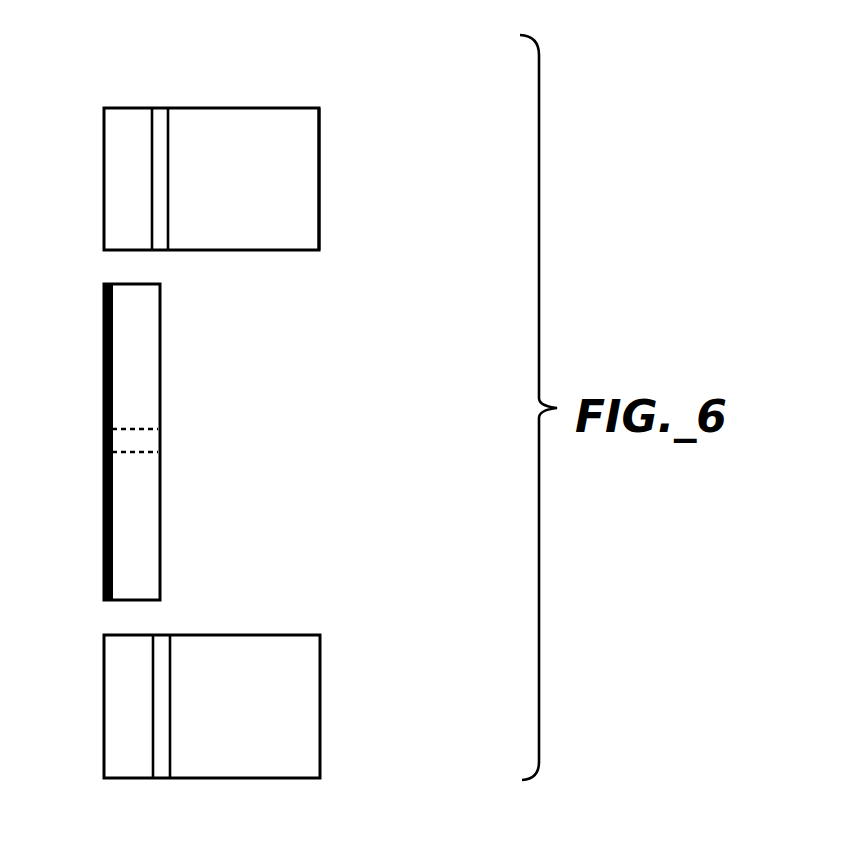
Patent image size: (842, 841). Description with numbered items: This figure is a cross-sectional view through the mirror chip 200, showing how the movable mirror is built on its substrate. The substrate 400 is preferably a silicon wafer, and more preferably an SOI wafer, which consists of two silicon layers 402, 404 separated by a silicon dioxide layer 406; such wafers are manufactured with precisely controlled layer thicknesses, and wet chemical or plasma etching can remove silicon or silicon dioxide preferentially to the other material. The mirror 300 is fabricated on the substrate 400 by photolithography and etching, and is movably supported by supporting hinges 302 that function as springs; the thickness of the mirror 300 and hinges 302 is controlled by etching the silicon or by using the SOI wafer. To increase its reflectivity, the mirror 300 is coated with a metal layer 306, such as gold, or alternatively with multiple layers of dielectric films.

The mirror chip 200 is at (399, 703).
The mirror 300 is at (160, 367).
The supporting hinges 302 is at (152, 442).
The metal layer 306 is at (106, 420).
The substrate 400 is at (320, 76).
The silicon layer 402 is at (111, 195).
The silicon layer 404 is at (311, 195).
The silicon dioxide layer 406 is at (162, 252).